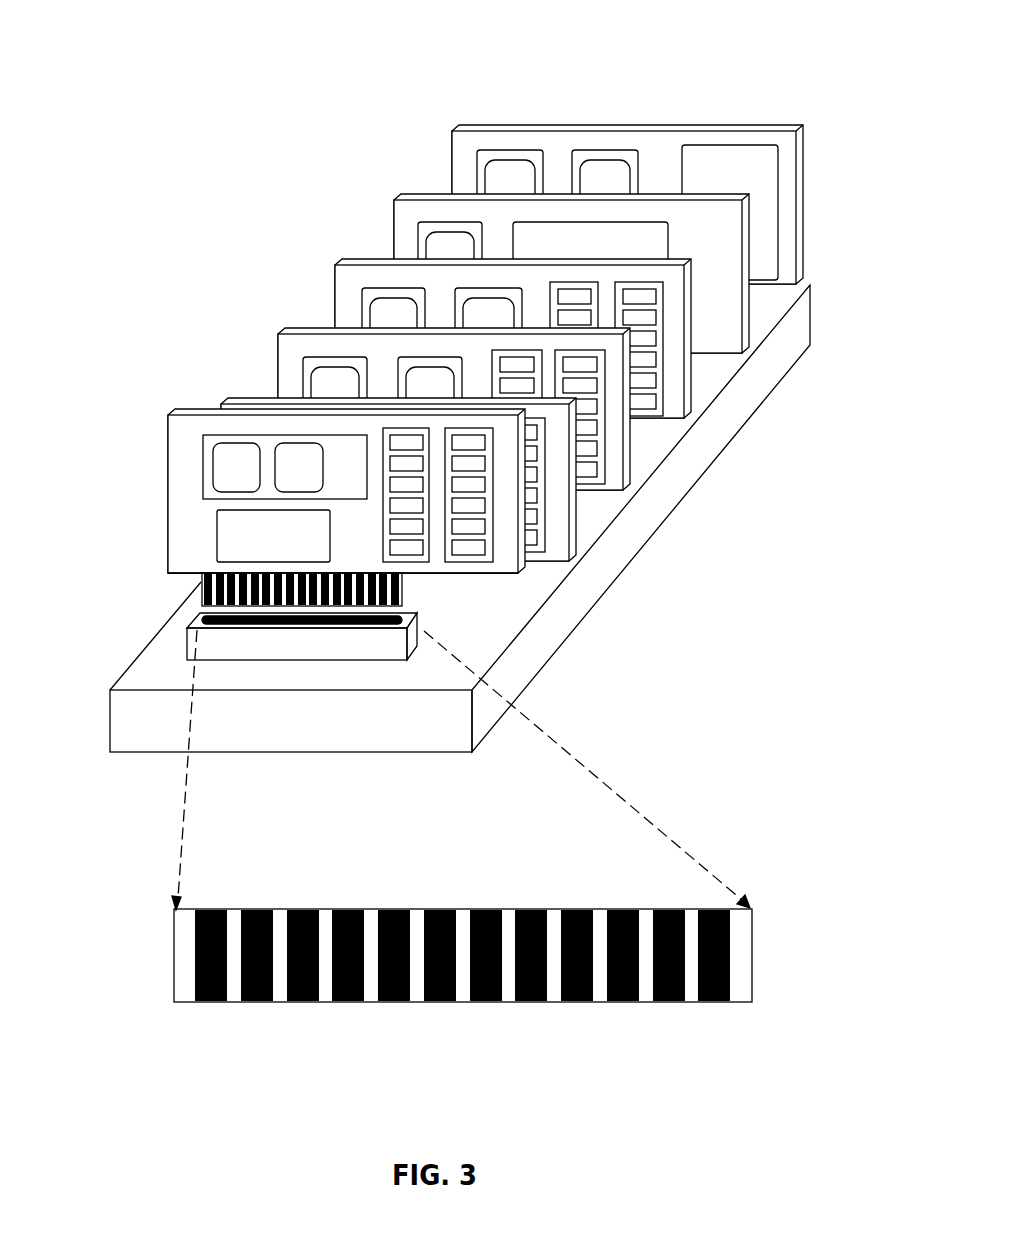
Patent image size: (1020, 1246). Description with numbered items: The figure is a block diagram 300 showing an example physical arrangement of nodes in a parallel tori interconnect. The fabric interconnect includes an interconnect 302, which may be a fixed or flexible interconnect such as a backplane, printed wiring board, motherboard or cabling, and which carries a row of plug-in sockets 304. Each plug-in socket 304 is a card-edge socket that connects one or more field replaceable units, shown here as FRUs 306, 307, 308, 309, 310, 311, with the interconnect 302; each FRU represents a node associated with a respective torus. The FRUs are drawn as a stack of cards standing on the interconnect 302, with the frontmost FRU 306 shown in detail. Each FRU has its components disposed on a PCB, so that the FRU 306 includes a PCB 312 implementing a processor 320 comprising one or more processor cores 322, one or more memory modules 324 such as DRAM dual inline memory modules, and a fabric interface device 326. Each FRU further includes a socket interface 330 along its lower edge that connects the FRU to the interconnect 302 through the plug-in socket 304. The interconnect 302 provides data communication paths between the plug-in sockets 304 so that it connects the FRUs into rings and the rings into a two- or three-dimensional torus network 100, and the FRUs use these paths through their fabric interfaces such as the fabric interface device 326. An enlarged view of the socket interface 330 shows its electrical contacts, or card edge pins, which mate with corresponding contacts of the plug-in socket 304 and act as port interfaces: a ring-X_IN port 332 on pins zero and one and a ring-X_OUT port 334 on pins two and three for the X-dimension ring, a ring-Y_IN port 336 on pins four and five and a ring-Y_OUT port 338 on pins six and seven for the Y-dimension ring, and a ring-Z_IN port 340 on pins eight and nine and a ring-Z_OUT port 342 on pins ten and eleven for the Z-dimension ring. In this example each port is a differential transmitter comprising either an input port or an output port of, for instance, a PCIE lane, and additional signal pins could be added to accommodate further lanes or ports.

The torus network 100 is at (228, 215).
The block diagram 300 is at (713, 31).
The interconnect 302 is at (110, 724).
The plug-in socket 304 is at (187, 641).
The FRU 306 is at (344, 466).
The FRU 307 is at (228, 399).
The FRU 308 is at (283, 329).
The FRU 309 is at (340, 261).
The FRU 310 is at (398, 195).
The FRU 311 is at (458, 126).
The PCB 312 is at (492, 575).
The processor 320 is at (334, 490).
The processor core 322 is at (225, 474).
The memory module 324 is at (383, 548).
The fabric interface device 326 is at (217, 546).
The socket interface 330 is at (404, 596).
The ring-X_IN port 332 is at (234, 943).
The ring-X_OUT port 334 is at (325, 943).
The ring-Y_IN port 336 is at (417, 943).
The ring-Y_OUT port 338 is at (508, 943).
The ring-Z_IN port 340 is at (600, 943).
The ring-Z_OUT port 342 is at (691, 943).